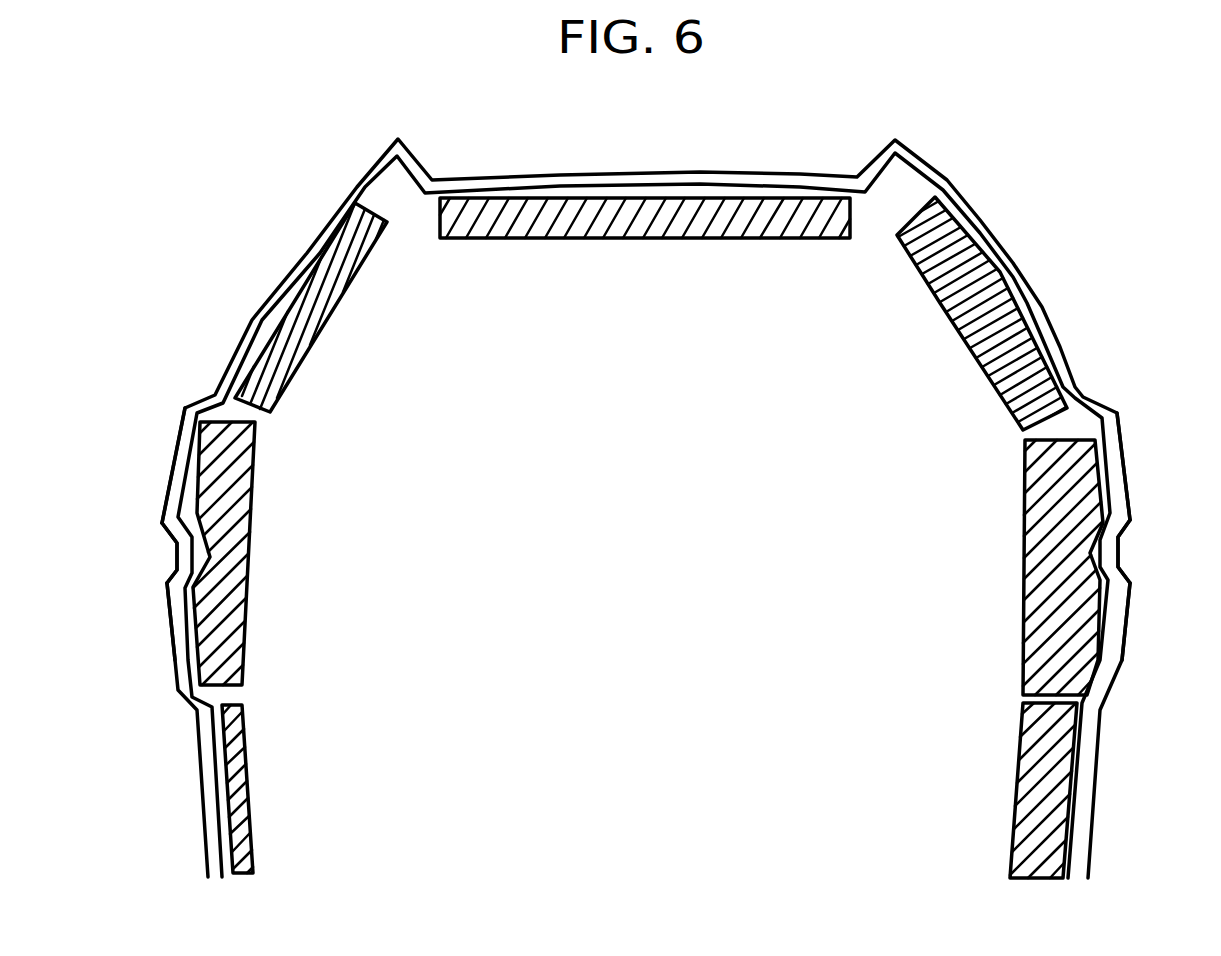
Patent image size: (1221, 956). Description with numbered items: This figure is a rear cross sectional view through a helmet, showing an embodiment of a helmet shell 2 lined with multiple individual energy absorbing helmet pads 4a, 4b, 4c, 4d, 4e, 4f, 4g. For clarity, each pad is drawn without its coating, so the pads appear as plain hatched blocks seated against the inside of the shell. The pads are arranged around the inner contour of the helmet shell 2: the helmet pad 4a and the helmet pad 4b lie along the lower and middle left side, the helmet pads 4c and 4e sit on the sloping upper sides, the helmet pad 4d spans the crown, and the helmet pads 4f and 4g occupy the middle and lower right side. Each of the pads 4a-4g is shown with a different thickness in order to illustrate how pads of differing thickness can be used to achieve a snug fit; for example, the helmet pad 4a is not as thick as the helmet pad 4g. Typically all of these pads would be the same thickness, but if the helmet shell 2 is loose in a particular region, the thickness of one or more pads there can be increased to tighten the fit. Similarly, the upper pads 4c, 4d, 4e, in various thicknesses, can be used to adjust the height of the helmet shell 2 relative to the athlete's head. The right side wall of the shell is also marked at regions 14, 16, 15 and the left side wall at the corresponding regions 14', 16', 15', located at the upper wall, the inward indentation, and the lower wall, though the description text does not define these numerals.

The helmet shell 2 is at (952, 168).
The helmet pad 4a is at (260, 784).
The helmet pad 4b is at (260, 602).
The helmet pad 4c is at (326, 340).
The helmet pad 4d is at (640, 252).
The helmet pad 4e is at (940, 325).
The helmet pad 4f is at (1011, 553).
The helmet pad 4g is at (1008, 780).
The upper side wall portion 14 is at (1162, 466).
The lower side wall portion 15 is at (1160, 621).
The indented portion 16 is at (1157, 551).
The upper side wall portion 14' is at (151, 465).
The lower side wall portion 15' is at (145, 621).
The indented portion 16' is at (142, 553).